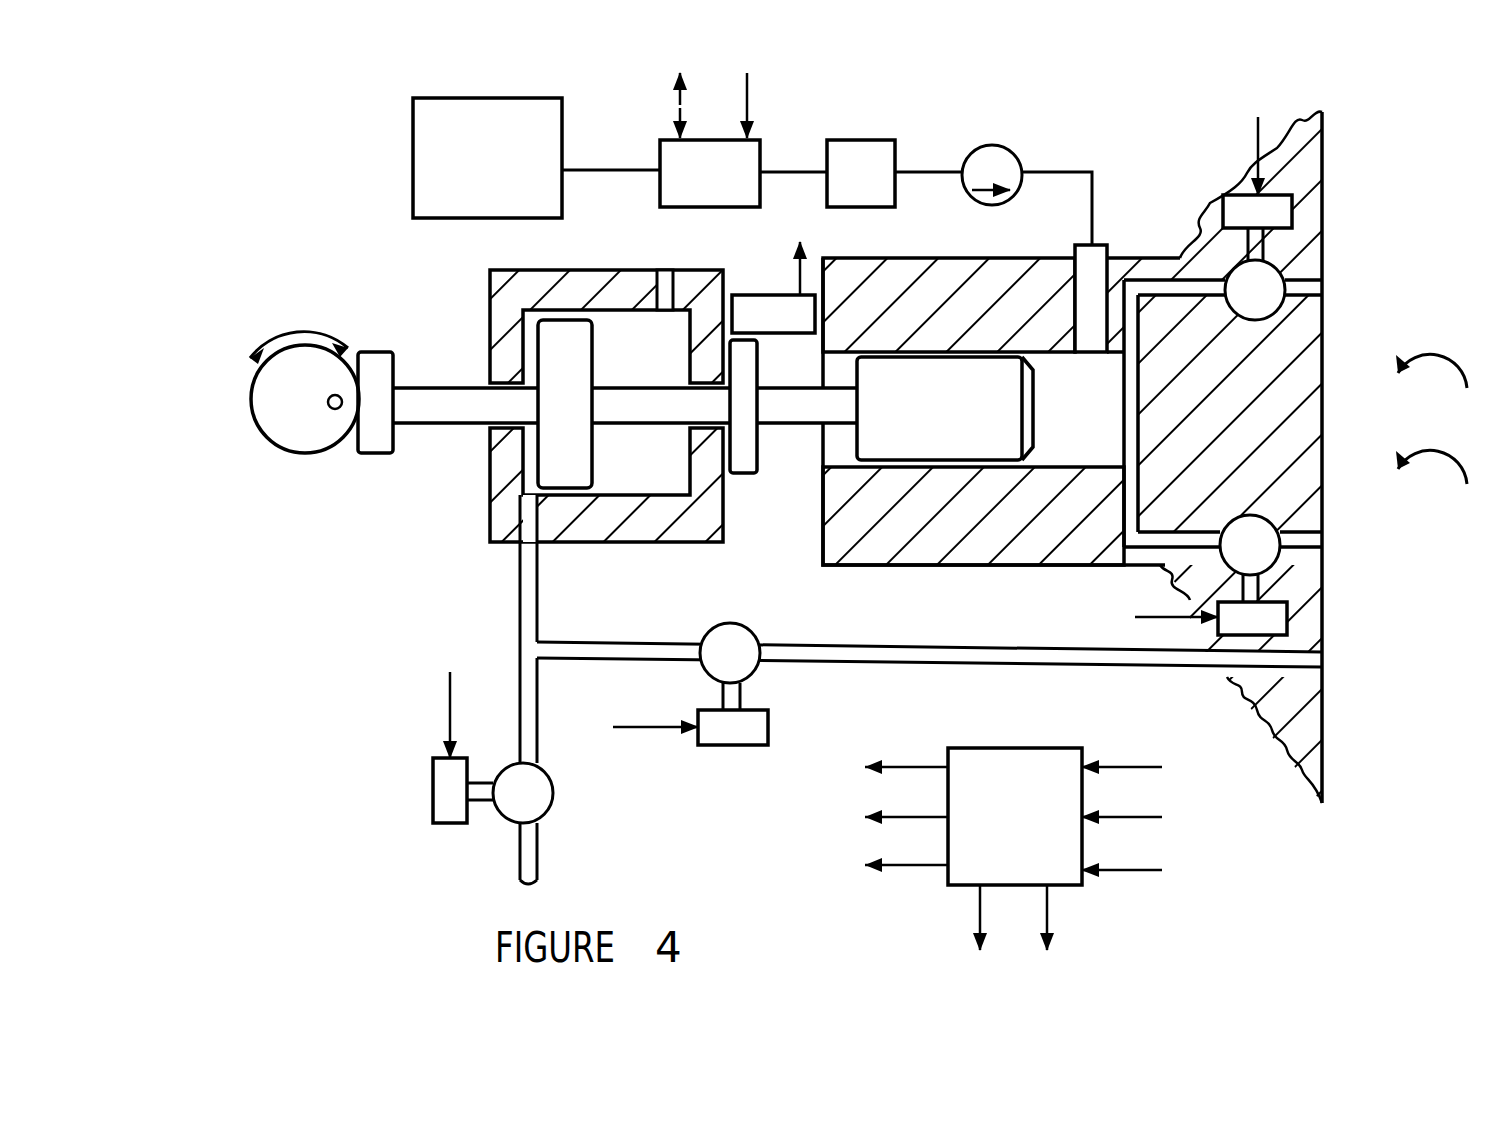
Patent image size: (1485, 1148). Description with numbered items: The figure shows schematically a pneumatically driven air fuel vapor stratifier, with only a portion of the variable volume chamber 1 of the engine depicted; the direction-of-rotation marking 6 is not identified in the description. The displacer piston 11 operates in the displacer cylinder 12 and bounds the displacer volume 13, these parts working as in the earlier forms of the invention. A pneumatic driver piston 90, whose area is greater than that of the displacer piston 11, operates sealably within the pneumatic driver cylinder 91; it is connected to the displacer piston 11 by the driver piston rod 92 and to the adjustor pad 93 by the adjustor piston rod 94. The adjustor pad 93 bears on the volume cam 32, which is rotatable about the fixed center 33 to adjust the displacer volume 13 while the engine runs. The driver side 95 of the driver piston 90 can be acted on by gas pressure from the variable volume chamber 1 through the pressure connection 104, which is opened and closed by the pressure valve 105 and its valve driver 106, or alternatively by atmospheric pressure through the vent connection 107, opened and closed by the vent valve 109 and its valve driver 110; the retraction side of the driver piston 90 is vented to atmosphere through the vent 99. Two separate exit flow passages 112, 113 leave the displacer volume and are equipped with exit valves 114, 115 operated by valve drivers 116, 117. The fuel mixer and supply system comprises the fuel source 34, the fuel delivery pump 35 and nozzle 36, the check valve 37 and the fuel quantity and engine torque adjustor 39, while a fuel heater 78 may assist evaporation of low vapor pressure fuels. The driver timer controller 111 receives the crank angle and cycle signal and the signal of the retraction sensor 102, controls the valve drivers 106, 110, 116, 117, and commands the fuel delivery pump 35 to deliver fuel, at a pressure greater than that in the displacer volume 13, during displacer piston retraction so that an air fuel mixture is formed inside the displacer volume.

The variable volume chamber 1 is at (1431, 463).
The rotation direction of feed 6 is at (1431, 367).
The displacer piston 11 is at (822, 565).
The displacer cylinder 12 is at (890, 432).
The displacer volume 13 is at (1060, 453).
The volume cam 32 is at (270, 400).
The center 33 is at (330, 405).
The fuel source 34 is at (430, 125).
The fuel delivery pump 35 is at (735, 170).
The nozzle 36 is at (1092, 267).
The check valve 37 is at (1022, 172).
The fuel quantity and engine torque adjustor 39 is at (706, 491).
The fuel heater 78 is at (875, 170).
The pneumatic driver piston 90 is at (555, 345).
The pneumatic driver cylinder 91 is at (620, 305).
The driver piston rod 92 is at (800, 430).
The adjustor pad 93 is at (383, 440).
The adjustor piston rod 94 is at (465, 405).
The driver side 95 is at (530, 367).
The vent 99 is at (678, 268).
The retraction sensor 102 is at (770, 318).
The pressure connection 104 is at (1010, 663).
The pressure valve 105 is at (720, 633).
The valve driver 106 is at (743, 737).
The vent connection 107 is at (525, 855).
The vent valve 109 is at (540, 805).
The valve driver 110 is at (433, 790).
The driver timer controller 111 is at (1018, 777).
The exit flow passage 112 is at (1187, 287).
The exit flow passage 113 is at (1150, 542).
The exit valve 114 is at (1262, 215).
The exit valve 115 is at (1267, 553).
The valve driver 116 is at (1265, 272).
The valve driver 117 is at (1265, 620).